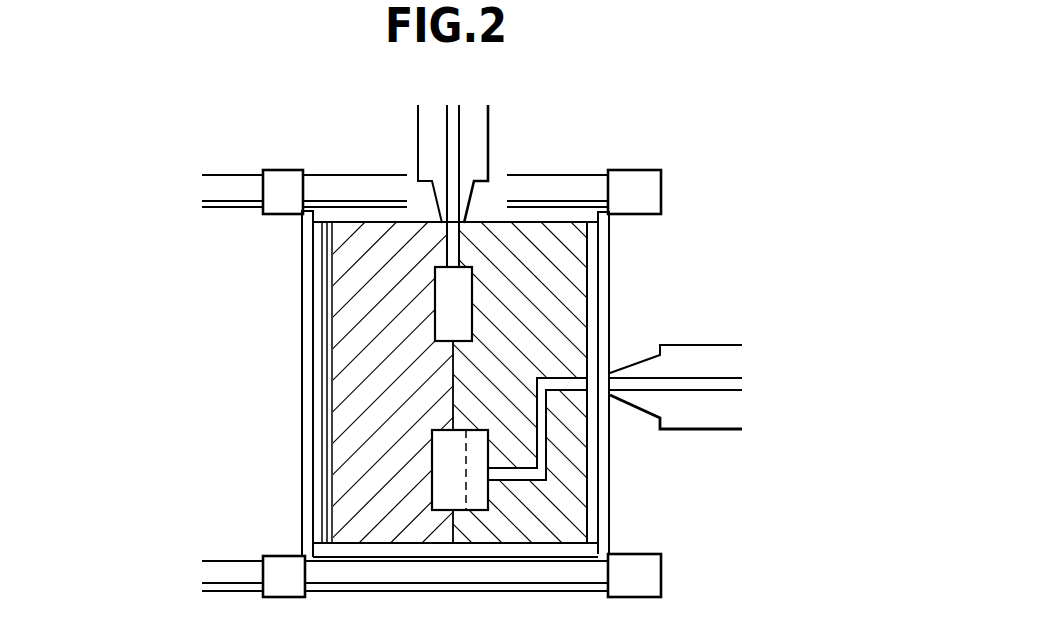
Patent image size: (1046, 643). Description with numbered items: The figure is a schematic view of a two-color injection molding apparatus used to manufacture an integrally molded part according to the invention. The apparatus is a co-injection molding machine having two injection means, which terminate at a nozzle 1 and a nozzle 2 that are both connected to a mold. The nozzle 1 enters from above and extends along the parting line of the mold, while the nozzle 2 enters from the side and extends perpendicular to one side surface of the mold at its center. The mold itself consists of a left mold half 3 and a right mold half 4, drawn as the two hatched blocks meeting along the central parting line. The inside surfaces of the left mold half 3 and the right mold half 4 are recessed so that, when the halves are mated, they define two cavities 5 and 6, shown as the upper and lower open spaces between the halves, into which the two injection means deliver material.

The nozzle 1 is at (457, 128).
The nozzle 2 is at (698, 382).
The left mold half 3 is at (347, 283).
The right mold half 4 is at (552, 512).
The cavity 5 is at (465, 286).
The cavity 6 is at (483, 487).